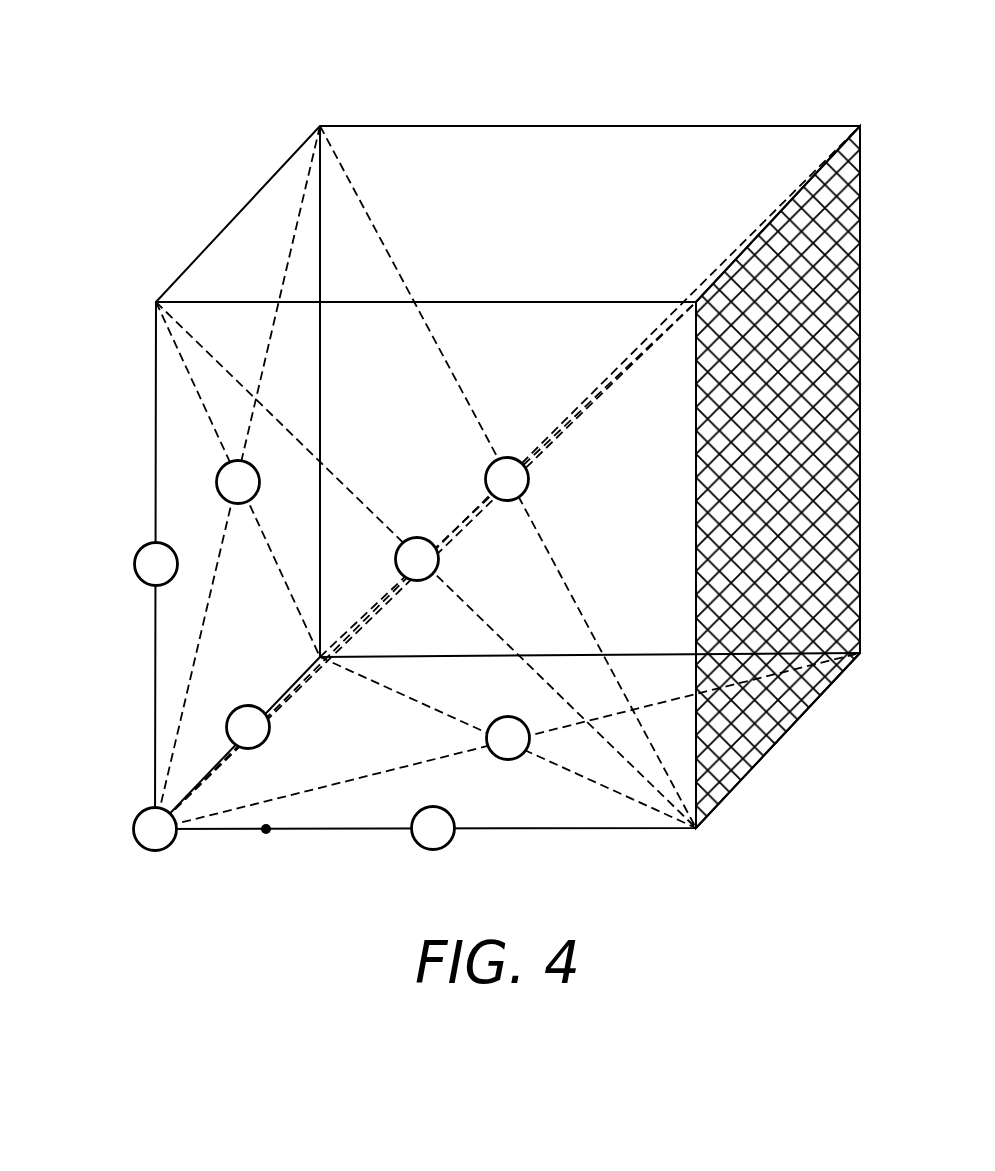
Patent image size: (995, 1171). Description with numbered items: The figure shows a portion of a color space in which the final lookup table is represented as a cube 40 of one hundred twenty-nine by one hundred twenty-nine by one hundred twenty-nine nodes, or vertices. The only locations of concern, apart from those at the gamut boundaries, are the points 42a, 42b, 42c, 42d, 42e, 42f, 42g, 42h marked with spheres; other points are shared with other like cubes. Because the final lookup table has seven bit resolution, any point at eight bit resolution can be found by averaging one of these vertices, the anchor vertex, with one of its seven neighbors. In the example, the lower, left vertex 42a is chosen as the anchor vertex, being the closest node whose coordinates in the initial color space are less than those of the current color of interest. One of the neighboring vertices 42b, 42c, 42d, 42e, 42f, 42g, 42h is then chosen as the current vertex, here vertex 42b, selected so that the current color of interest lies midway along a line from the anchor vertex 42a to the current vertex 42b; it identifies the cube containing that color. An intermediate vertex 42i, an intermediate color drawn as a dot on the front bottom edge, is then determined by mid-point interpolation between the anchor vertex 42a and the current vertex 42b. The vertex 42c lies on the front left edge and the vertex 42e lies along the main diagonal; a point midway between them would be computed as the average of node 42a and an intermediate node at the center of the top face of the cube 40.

The cube 40 is at (726, 72).
The lower, left vertex (anchor vertex) 42a is at (132, 829).
The current vertex 42b is at (442, 848).
The vertex on the front left edge 42c is at (133, 563).
The vertex 42d is at (216, 482).
The vertex along the main diagonal 42e is at (505, 458).
The vertex 42f is at (420, 537).
The vertex 42g is at (503, 759).
The vertex 42h is at (268, 737).
The intermediate vertex (intermediate color) 42i is at (268, 833).